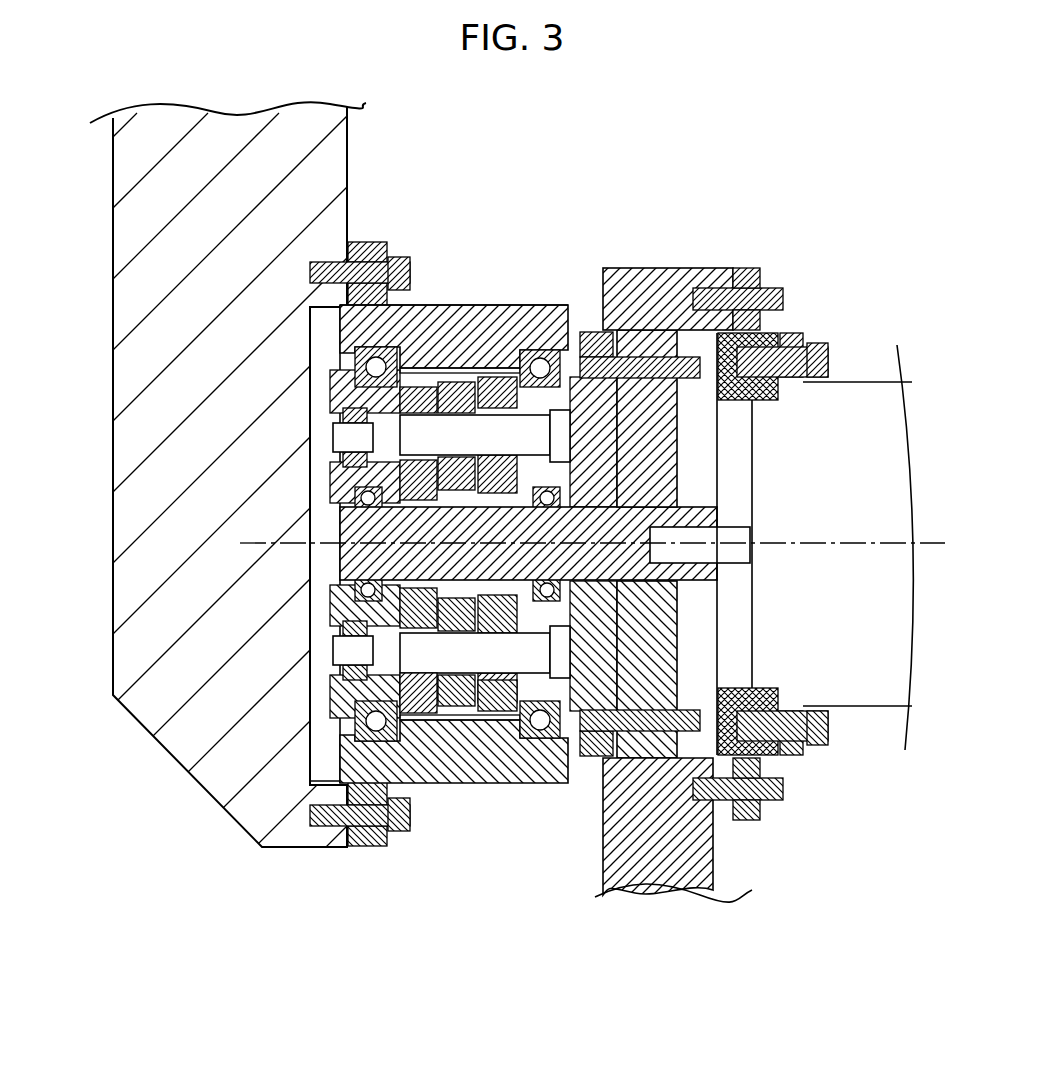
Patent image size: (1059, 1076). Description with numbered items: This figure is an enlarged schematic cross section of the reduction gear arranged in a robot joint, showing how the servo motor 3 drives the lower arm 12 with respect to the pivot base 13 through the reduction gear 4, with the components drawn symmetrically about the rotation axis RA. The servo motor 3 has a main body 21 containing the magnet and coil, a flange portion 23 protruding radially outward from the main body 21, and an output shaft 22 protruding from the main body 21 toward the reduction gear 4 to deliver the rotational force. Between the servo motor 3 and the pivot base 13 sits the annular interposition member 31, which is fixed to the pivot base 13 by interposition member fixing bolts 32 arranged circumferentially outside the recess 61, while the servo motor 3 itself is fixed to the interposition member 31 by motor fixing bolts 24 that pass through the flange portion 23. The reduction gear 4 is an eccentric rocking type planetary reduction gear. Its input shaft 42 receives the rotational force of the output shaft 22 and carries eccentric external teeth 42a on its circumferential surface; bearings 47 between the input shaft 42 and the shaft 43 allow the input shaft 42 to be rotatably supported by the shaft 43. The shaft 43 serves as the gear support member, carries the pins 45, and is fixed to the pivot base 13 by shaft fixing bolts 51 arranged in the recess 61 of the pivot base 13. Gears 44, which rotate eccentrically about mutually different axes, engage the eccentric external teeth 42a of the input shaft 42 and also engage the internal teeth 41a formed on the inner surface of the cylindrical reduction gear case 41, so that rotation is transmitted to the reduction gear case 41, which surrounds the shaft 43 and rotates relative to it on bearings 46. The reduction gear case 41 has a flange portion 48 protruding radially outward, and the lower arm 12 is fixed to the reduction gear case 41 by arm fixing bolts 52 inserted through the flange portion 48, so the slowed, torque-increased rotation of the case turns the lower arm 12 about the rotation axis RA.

The servo motor 3 is at (857, 667).
The reduction gear 4 is at (545, 300).
The lower arm 12 is at (153, 241).
The pivot base 13 is at (680, 870).
The main body 21 is at (875, 390).
The output shaft 22 is at (742, 555).
The flange portion 23 is at (797, 333).
The motor fixing bolts 24 is at (822, 347).
The interposition member 31 is at (748, 268).
The interposition member fixing bolts 32 is at (770, 292).
The reduction gear case 41 is at (513, 305).
The internal teeth 41a is at (475, 712).
The input shaft 42 is at (460, 570).
The eccentric external teeth 42a is at (437, 787).
The shaft 43 is at (584, 332).
The gears 44 is at (488, 380).
The pins 45 is at (345, 438).
The bearings 46 is at (335, 318).
The bearings 47 is at (353, 487).
The flange portion 48 is at (366, 250).
The shaft fixing bolts 51 is at (650, 300).
The arm fixing bolts 52 is at (400, 262).
The recess 61 is at (680, 640).
The rotation axis RA is at (927, 540).